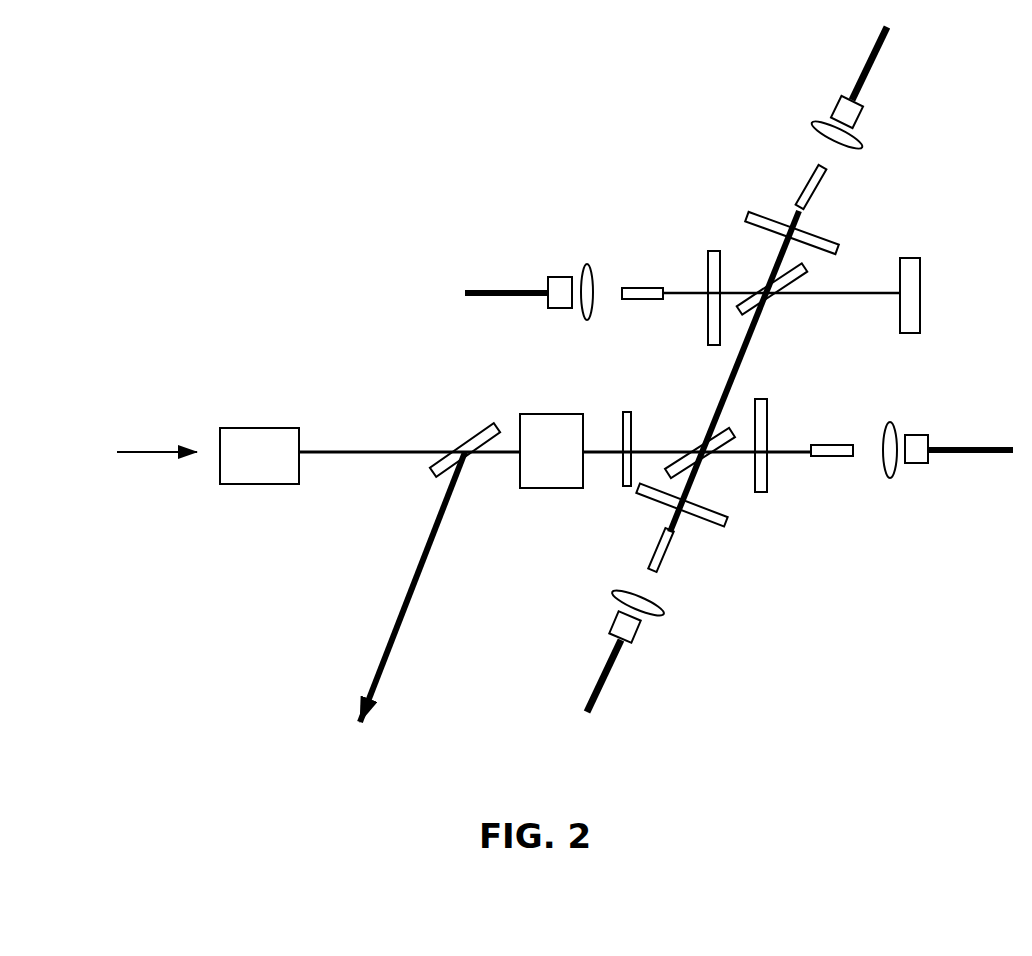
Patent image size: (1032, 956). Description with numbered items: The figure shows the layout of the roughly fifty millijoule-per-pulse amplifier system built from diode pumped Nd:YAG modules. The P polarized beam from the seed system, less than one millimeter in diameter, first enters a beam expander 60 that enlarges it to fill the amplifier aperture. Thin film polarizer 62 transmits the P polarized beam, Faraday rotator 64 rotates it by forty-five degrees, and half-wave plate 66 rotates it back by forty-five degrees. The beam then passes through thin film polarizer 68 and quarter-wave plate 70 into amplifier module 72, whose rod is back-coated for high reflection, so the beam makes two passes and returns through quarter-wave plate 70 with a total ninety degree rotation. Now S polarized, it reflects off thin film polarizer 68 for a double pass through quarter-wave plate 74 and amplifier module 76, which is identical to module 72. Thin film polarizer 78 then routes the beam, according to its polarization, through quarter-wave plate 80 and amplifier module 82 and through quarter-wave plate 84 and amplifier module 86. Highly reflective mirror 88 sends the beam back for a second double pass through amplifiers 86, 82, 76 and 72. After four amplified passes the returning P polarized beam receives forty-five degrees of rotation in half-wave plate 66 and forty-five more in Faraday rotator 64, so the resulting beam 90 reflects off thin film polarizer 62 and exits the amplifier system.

The beam expander 60 is at (246, 428).
The thin film polarizer 62 is at (467, 437).
The Faraday rotator 64 is at (557, 488).
The λ/2 waveplate 66 is at (626, 412).
The thin film polarizer 68 is at (713, 428).
The λ/4 waveplate 70 is at (770, 425).
The amplifier module 72 is at (918, 496).
The λ/4 waveplate 74 is at (723, 525).
The amplifier module 76 is at (684, 640).
The thin film polarizer 78 is at (780, 297).
The λ/4 waveplate 80 is at (772, 220).
The amplifier module 82 is at (794, 99).
The λ/4 waveplate 84 is at (707, 262).
The amplifier module 86 is at (556, 245).
The highly reflective mirror 88 is at (908, 258).
The beam 90 is at (366, 641).